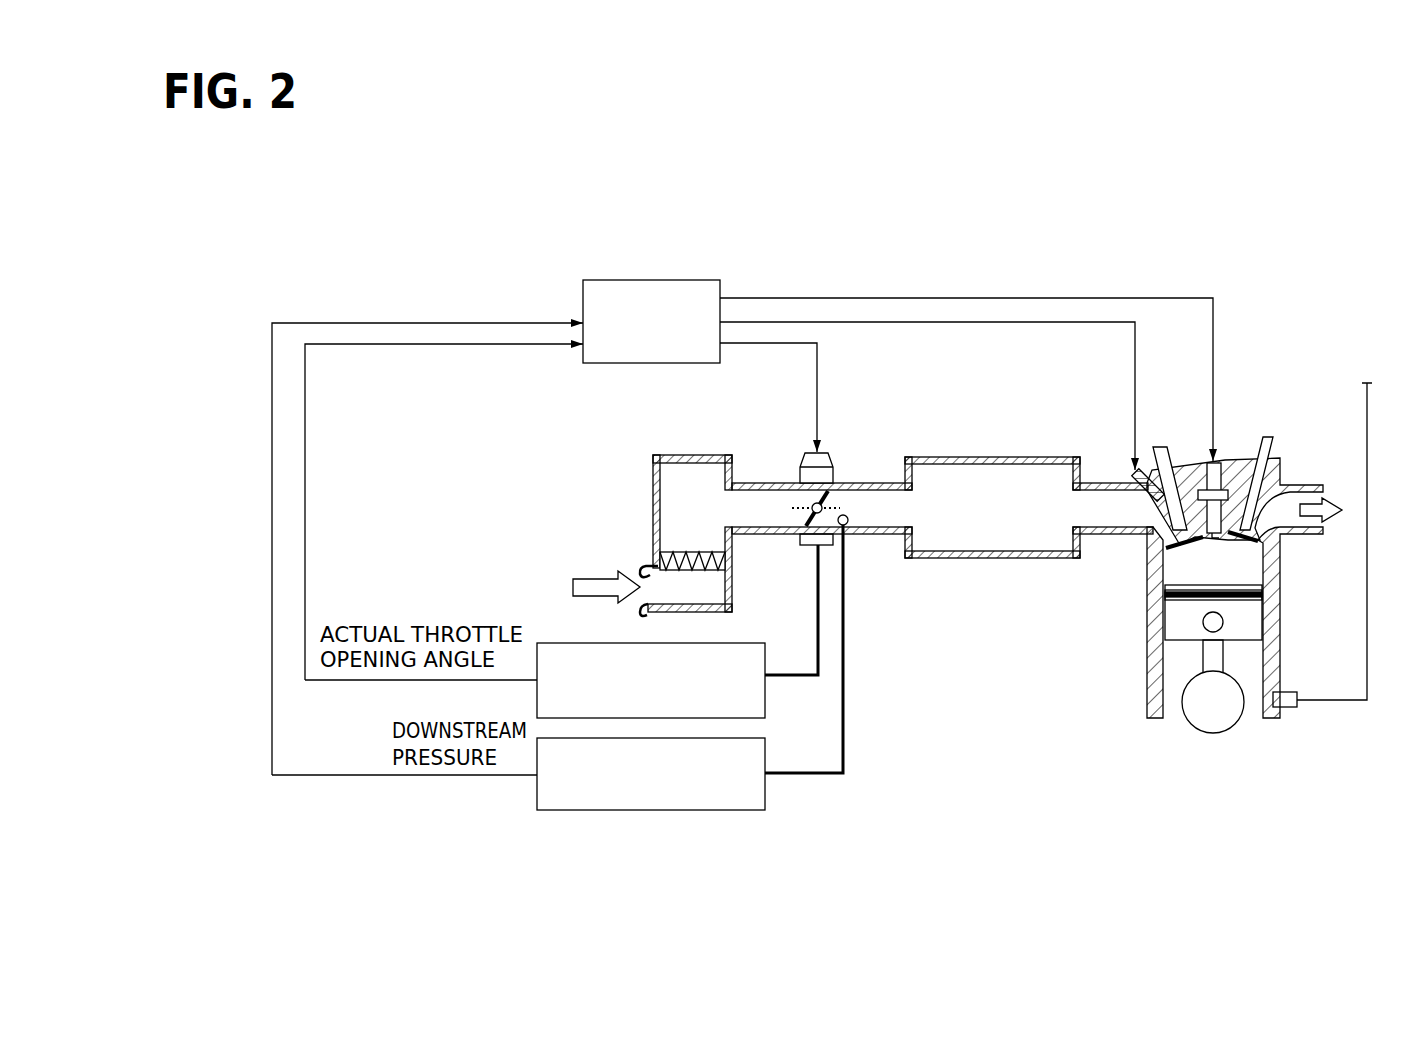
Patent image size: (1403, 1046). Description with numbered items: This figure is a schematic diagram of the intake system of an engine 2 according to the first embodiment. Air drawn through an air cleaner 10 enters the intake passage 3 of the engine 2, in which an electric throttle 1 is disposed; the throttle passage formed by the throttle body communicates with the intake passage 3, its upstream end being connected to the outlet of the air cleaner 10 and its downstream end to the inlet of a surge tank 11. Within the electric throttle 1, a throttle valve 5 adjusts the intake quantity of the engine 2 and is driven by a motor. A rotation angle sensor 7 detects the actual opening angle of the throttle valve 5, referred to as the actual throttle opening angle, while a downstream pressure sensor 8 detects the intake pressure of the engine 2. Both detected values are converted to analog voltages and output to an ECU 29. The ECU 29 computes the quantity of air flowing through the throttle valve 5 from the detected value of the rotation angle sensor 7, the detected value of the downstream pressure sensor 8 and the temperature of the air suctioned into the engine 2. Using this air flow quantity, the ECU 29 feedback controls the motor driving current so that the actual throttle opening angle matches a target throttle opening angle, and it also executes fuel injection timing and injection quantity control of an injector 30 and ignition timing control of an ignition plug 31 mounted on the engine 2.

The electric throttle 1 is at (942, 466).
The engine 2 is at (1208, 556).
The intake passage 3 is at (882, 483).
The throttle valve 5 is at (813, 497).
The rotation angle sensor 7 is at (765, 666).
The downstream pressure sensor 8 is at (767, 788).
The air cleaner 10 is at (683, 553).
The surge tank 11 is at (1015, 457).
The ECU 29 is at (622, 280).
The injector 30 is at (1163, 452).
The ignition plug 31 is at (1222, 462).